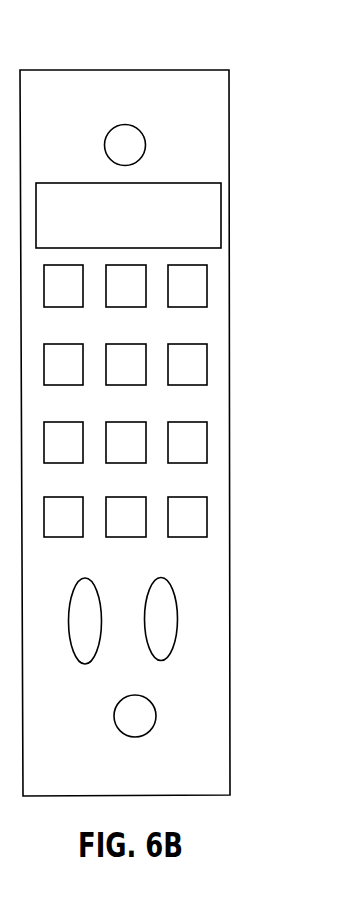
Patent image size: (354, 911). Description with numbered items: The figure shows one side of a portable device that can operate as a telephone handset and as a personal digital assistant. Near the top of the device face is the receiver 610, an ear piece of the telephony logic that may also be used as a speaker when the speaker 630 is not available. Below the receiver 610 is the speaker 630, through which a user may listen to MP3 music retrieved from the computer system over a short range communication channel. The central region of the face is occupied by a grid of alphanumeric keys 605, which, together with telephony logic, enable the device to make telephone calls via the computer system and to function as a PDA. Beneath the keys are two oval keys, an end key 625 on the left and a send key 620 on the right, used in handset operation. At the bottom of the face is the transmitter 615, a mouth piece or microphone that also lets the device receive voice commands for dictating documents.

The alphanumeric keys 605 is at (192, 344).
The receiver 610 is at (143, 142).
The transmitter 615 is at (157, 708).
The send key 620 is at (180, 612).
The end key 625 is at (85, 618).
The speaker 630 is at (175, 232).